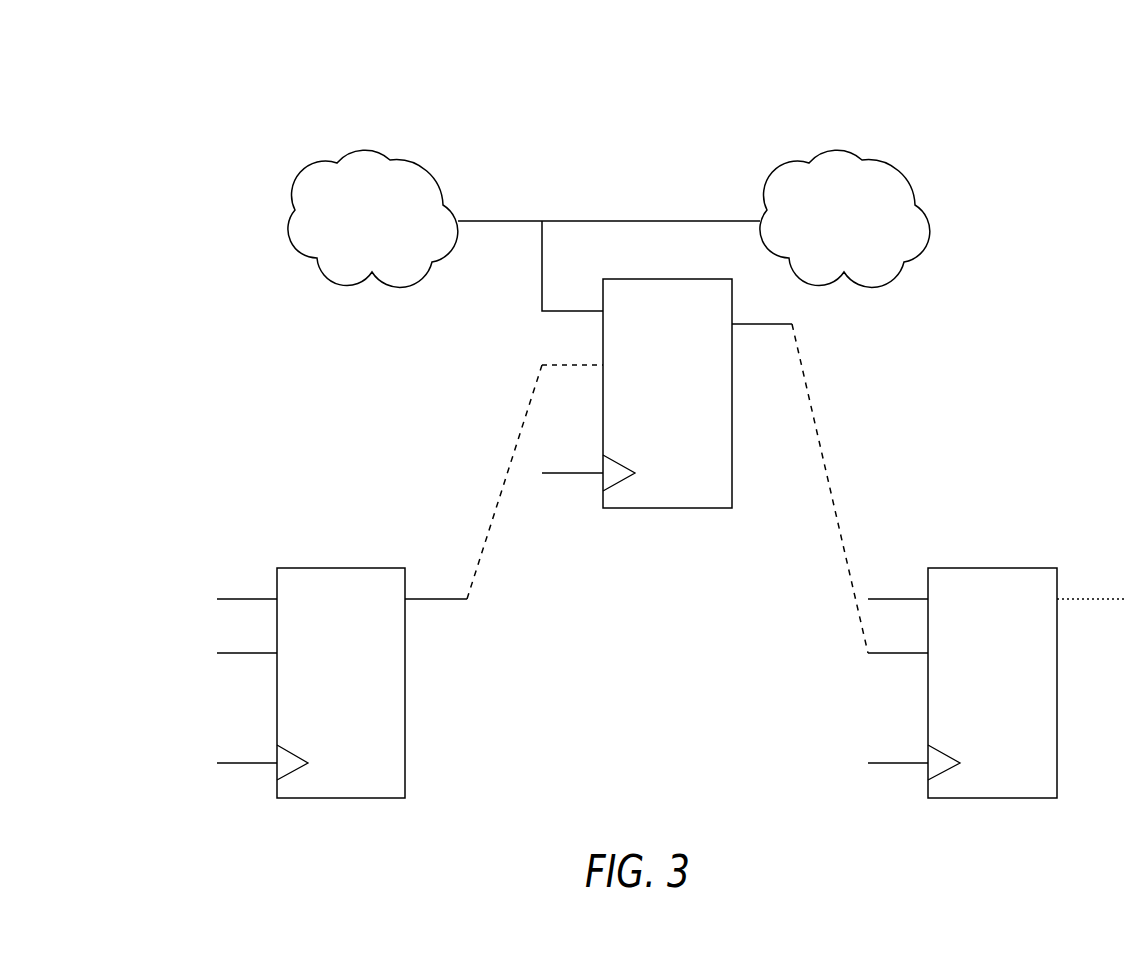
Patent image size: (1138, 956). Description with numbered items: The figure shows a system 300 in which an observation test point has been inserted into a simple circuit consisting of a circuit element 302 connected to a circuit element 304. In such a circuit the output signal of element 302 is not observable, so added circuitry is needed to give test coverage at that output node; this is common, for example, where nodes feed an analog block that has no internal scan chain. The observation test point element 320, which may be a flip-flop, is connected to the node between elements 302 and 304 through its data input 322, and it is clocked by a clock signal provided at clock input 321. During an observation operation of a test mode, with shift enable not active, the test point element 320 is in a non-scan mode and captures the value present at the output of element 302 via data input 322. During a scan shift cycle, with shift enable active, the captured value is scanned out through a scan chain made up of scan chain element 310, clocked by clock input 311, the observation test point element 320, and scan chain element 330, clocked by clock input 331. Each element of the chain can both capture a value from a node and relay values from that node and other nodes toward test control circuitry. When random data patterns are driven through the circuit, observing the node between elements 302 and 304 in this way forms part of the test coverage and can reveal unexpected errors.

The system 300 is at (294, 44).
The circuit element 302 is at (368, 152).
The circuit element 304 is at (838, 152).
The scan chain element 310 is at (343, 568).
The clock input 311 is at (238, 761).
The observation test point element 320 is at (668, 508).
The clock input 321 is at (565, 471).
The data input 322 is at (538, 306).
The scan chain element 330 is at (995, 568).
The clock input 331 is at (890, 761).